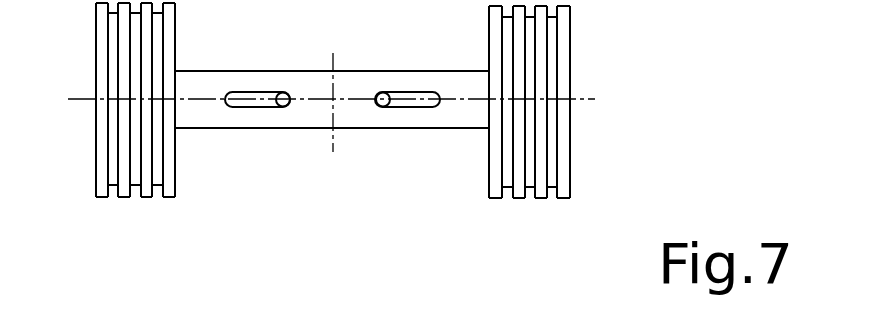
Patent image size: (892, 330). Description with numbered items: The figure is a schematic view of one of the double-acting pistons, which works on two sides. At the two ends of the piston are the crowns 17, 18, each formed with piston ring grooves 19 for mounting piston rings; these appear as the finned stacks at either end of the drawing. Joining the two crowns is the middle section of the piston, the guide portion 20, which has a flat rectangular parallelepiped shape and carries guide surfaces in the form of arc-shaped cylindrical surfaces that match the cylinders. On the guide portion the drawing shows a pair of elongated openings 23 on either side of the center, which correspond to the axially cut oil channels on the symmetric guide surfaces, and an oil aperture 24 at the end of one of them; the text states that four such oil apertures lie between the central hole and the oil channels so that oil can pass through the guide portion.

The crown 17 is at (96, 38).
The crown 18 is at (570, 40).
The piston ring grooves 19 is at (135, 197).
The guide portion 20 is at (365, 118).
The slots 23 is at (237, 107).
The oil apertures 24 is at (287, 107).